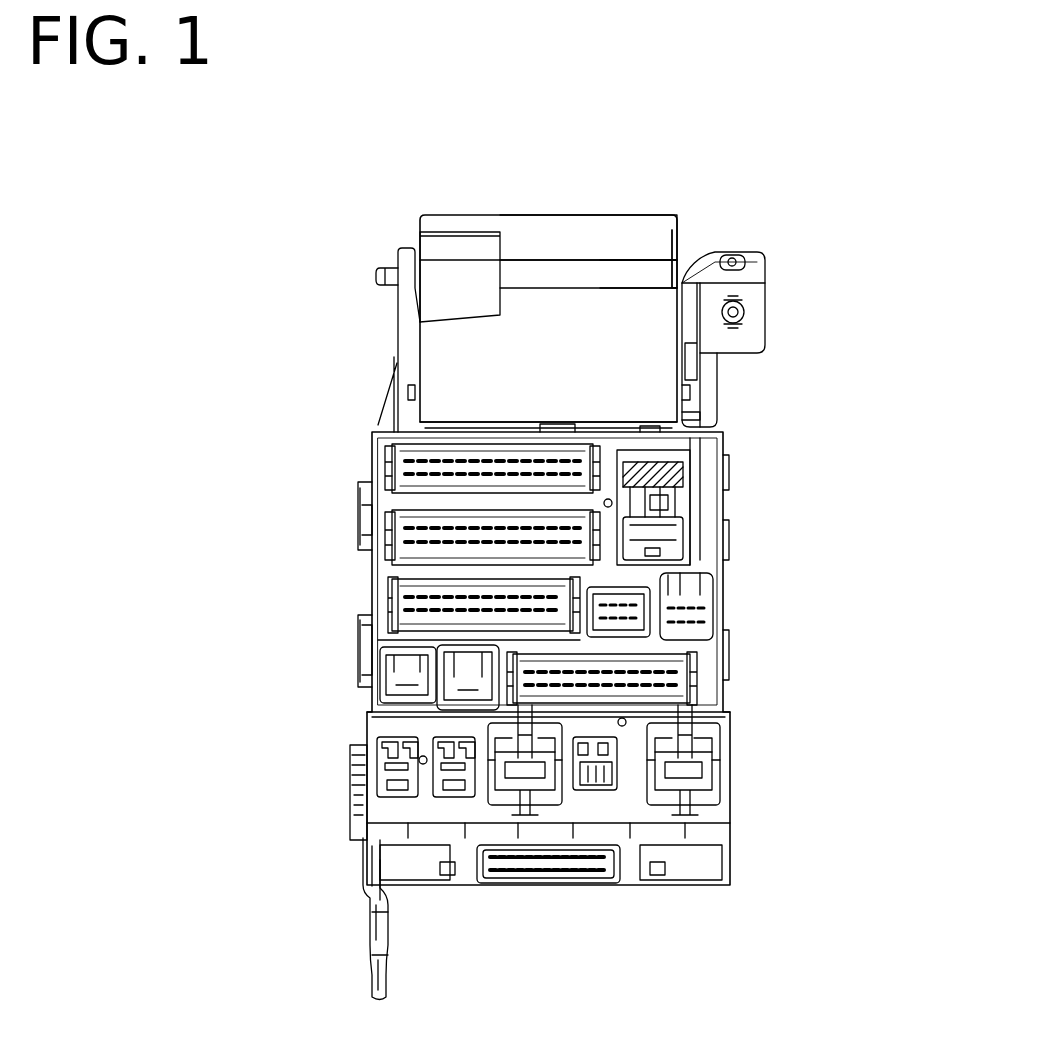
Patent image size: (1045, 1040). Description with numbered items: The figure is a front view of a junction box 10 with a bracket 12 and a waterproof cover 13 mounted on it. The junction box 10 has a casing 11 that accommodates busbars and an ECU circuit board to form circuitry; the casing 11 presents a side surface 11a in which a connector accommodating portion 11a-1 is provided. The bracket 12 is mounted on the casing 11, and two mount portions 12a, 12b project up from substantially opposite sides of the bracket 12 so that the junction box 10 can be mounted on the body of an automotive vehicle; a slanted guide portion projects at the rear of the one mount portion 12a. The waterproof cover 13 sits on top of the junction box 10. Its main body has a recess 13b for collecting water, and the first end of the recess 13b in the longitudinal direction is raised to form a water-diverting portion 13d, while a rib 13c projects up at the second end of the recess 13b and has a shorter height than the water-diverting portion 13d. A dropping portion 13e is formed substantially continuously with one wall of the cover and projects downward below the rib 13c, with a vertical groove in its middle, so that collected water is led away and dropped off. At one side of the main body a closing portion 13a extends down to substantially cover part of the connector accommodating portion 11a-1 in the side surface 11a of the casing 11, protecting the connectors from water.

The junction box 10 is at (733, 545).
The casing 11 is at (725, 648).
The side surface 11a is at (370, 558).
The connector accommodating portion 11a-1 is at (403, 475).
The bracket 12 is at (722, 382).
The mount portion 12a is at (767, 322).
The mount portion 12b is at (397, 253).
The waterproof cover 13 is at (457, 357).
The closing portion 13a is at (447, 438).
The recess 13b is at (623, 272).
The rib 13c is at (535, 237).
The water-diverting portion 13d is at (478, 275).
The dropping portion 13e is at (688, 250).